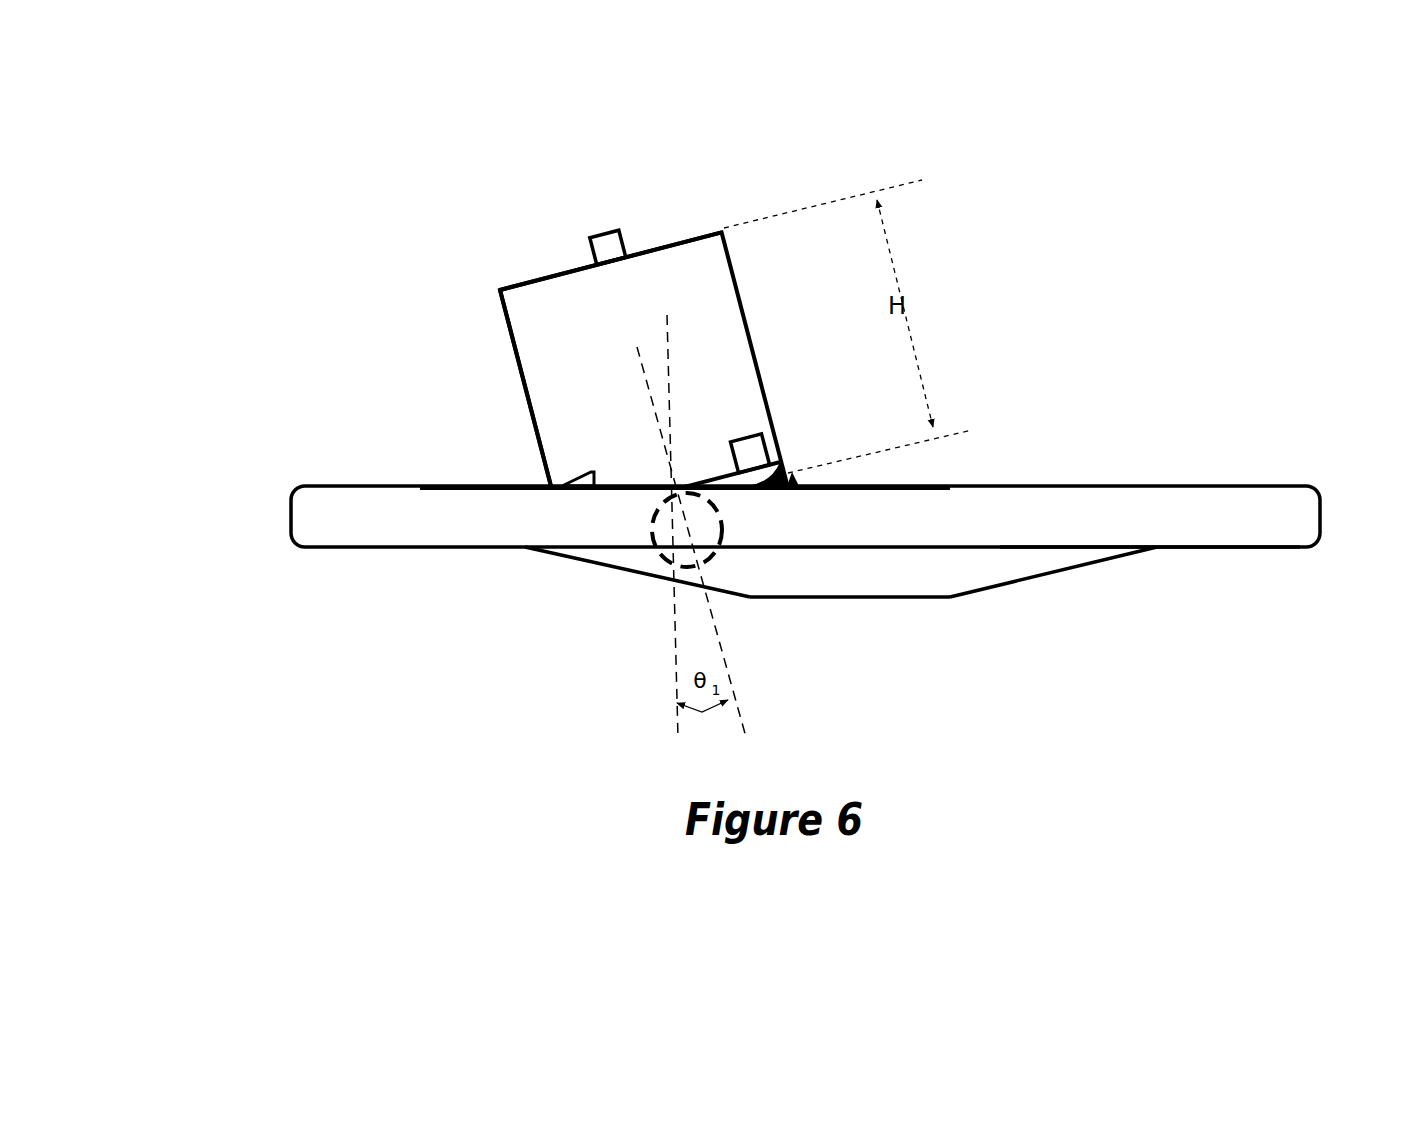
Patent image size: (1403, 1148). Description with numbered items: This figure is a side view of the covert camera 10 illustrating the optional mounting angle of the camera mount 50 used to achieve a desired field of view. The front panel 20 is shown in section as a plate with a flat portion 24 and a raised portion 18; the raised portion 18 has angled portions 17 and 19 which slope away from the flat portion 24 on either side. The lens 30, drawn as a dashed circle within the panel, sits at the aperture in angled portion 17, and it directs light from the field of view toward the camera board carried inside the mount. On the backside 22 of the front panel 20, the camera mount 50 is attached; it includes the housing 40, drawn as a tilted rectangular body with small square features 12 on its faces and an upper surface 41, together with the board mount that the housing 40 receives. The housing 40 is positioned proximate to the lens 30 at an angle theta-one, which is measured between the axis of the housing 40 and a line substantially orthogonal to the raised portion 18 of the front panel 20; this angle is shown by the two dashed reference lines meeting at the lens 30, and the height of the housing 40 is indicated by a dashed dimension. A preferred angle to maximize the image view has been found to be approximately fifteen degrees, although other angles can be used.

The camera 10 is at (336, 173).
The solder bumps 12 is at (607, 245).
The angled portion 17 is at (583, 558).
The raised portion 18 is at (880, 599).
The angled portion 19 is at (1050, 577).
The front panel 20 is at (312, 487).
The backside 22 is at (778, 477).
The flat portion 24 is at (1220, 549).
The lens 30 is at (723, 537).
The housing 40 is at (548, 357).
The top surface of die 41 is at (512, 286).
The camera mount 50 is at (468, 377).